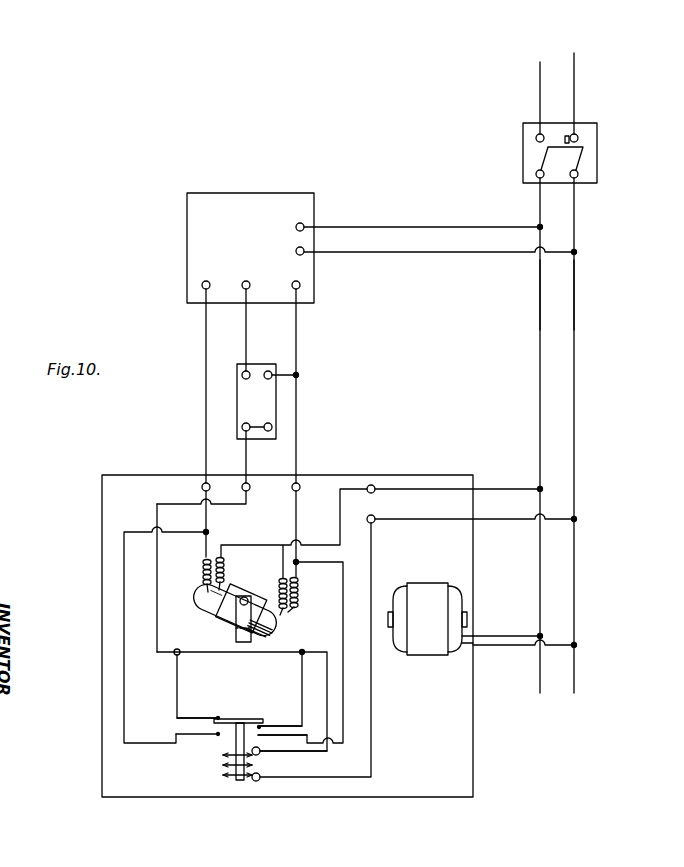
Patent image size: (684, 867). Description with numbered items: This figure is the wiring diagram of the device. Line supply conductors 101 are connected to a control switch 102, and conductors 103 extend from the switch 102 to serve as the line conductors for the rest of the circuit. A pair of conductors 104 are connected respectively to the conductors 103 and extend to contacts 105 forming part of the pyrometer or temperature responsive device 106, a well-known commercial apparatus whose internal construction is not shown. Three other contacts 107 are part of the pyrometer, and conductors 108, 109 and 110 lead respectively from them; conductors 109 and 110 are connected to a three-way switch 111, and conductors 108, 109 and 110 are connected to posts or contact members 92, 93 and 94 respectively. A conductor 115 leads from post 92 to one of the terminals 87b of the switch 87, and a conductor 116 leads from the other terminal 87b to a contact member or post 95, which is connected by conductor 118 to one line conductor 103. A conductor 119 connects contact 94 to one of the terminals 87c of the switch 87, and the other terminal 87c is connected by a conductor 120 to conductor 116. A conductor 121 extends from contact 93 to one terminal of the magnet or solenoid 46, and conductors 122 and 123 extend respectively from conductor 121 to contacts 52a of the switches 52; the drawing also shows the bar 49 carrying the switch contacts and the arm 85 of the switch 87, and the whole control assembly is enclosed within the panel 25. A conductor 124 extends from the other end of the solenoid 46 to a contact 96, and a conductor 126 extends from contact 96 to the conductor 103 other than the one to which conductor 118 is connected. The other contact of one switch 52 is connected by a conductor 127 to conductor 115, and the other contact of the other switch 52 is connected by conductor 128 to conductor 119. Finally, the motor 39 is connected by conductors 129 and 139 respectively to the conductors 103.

The line supply conductors 101 is at (542, 85).
The control switch 102 is at (582, 158).
The conductors 103 is at (542, 298).
The pair of conductors 104 is at (417, 252).
The contacts 105 is at (305, 250).
The pyrometer or temperature responsive device 106 is at (233, 203).
The contacts 107 is at (296, 282).
The conductor 108 is at (206, 336).
The conductor 109 is at (246, 322).
The conductor 110 is at (296, 322).
The three-way switch 111 is at (269, 394).
The post or contact member 92 is at (201, 485).
The post or contact member 93 is at (250, 485).
The post or contact member 94 is at (300, 485).
The conductor 115 is at (207, 516).
The conductor 116 is at (232, 545).
The conductor 119 is at (297, 512).
The conductor 120 is at (285, 580).
The contact members or terminals 87b is at (205, 592).
The terminals 87c is at (278, 618).
The switch 87 is at (207, 610).
The switch actuating arm 85 is at (236, 632).
The conductor 121 is at (140, 636).
The conductor 127 is at (124, 690).
The conductor 122 is at (178, 668).
The conductor 123 is at (302, 684).
The conductor 128 is at (343, 688).
The conductor 124 is at (371, 757).
The contacts 52a is at (270, 726).
The switches 52 is at (270, 742).
The contact carrier bar 49 is at (238, 718).
The magnet or solenoid 46 is at (225, 766).
The contact member or post 95 is at (374, 492).
The contact 96 is at (374, 523).
The conductor 118 is at (483, 491).
The conductor 126 is at (485, 520).
The motor 39 is at (435, 655).
The conductor 129 is at (500, 634).
The conductor 139 is at (485, 647).
The control panel enclosure 25 is at (462, 750).